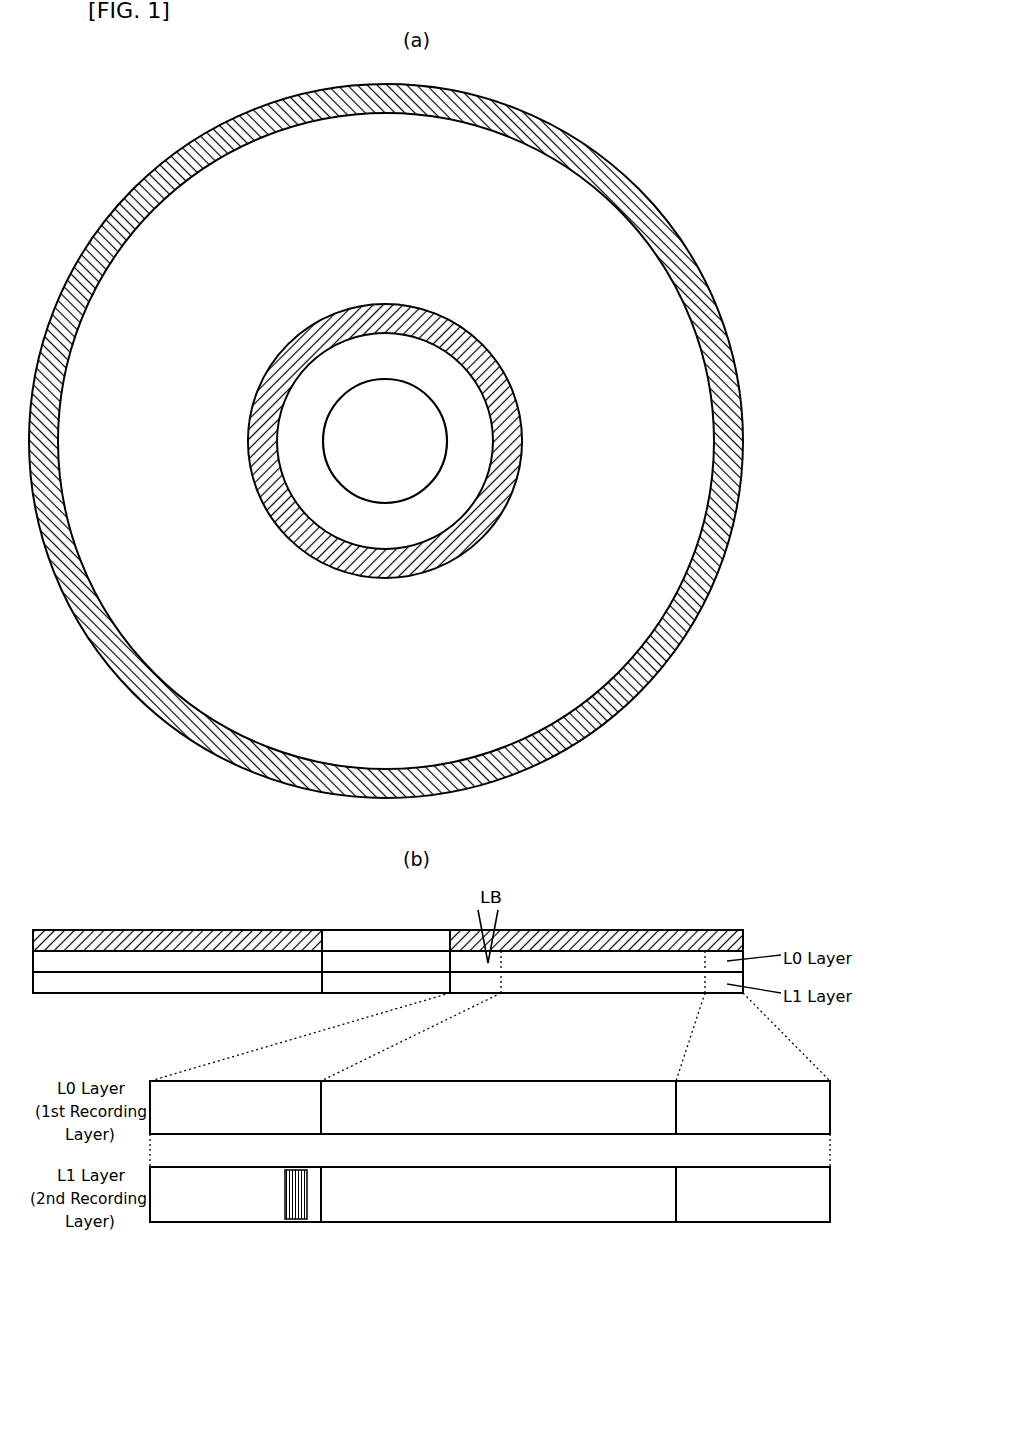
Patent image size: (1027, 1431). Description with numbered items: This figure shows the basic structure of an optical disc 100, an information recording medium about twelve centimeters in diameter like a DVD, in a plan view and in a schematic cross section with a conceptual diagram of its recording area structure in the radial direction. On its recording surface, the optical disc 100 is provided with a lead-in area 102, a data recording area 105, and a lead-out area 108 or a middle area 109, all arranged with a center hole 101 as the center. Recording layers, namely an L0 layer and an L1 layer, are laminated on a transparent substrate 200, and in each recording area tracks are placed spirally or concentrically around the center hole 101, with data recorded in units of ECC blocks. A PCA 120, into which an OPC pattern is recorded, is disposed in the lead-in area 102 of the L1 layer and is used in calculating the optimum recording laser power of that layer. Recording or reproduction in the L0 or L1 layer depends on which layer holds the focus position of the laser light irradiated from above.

The optical disc 100 is at (553, 124).
The center hole 101 is at (325, 420).
The lead-in area 102 is at (197, 1249).
The data recording area 105 is at (650, 415).
The lead-out area 108 is at (742, 425).
The middle area 109 is at (732, 1252).
The PCA (Power Calibration Area) 120 is at (297, 1221).
The transparent substrate 200 is at (722, 912).